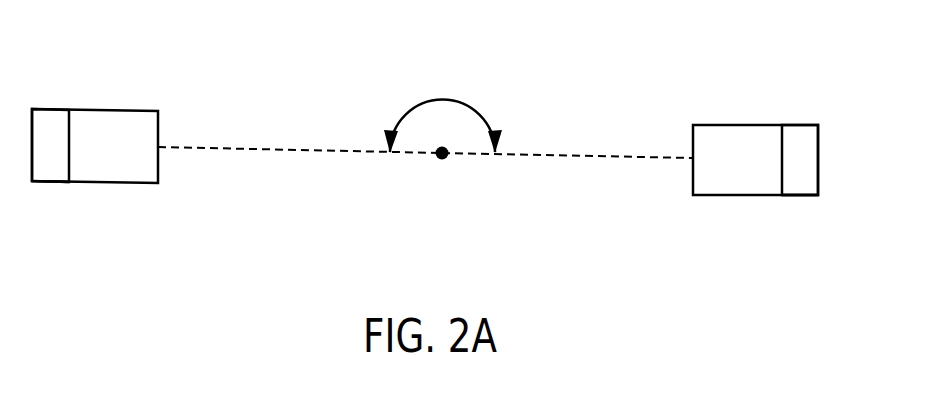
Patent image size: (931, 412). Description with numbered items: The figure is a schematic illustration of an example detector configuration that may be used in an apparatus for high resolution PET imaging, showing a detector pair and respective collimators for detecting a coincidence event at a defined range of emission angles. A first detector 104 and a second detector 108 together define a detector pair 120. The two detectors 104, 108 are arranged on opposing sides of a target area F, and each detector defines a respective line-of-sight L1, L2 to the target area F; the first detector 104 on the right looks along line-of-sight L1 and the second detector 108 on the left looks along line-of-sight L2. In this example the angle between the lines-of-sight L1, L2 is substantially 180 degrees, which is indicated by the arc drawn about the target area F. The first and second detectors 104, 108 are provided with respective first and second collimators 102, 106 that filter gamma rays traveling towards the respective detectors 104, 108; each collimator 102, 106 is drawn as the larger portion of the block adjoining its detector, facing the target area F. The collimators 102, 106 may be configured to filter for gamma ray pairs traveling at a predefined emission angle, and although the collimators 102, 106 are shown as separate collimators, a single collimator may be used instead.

The first collimator 102 is at (738, 133).
The first detector 104 is at (798, 133).
The second collimator 106 is at (130, 125).
The second detector 108 is at (52, 125).
The detector pair 120 is at (52, 173).
The target area F is at (443, 157).
The first line-of-sight L1 is at (600, 158).
The second line-of-sight L2 is at (265, 148).
The angle between the lines-of-sight 180 is at (440, 100).